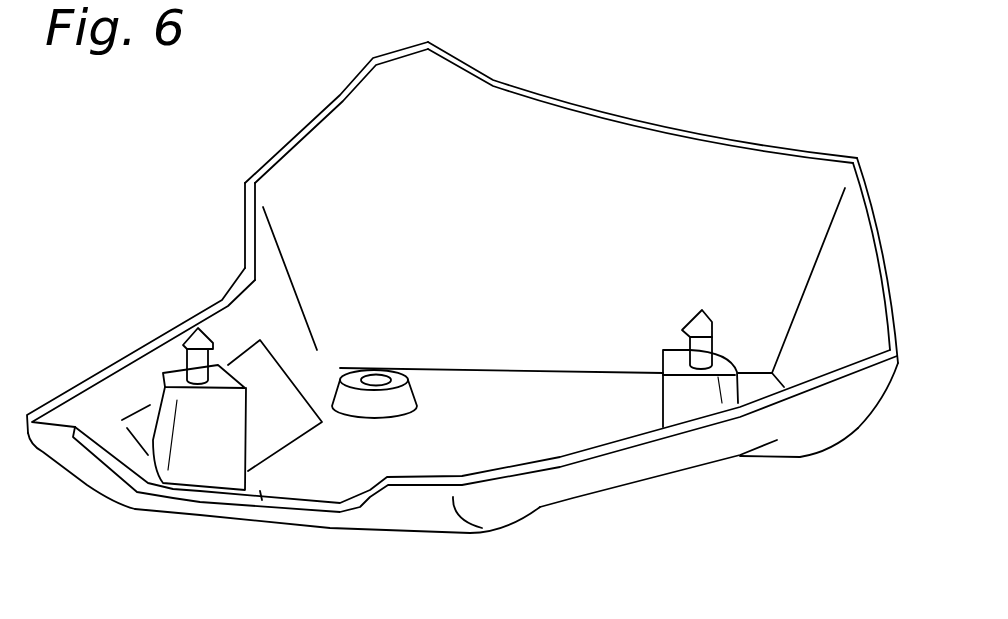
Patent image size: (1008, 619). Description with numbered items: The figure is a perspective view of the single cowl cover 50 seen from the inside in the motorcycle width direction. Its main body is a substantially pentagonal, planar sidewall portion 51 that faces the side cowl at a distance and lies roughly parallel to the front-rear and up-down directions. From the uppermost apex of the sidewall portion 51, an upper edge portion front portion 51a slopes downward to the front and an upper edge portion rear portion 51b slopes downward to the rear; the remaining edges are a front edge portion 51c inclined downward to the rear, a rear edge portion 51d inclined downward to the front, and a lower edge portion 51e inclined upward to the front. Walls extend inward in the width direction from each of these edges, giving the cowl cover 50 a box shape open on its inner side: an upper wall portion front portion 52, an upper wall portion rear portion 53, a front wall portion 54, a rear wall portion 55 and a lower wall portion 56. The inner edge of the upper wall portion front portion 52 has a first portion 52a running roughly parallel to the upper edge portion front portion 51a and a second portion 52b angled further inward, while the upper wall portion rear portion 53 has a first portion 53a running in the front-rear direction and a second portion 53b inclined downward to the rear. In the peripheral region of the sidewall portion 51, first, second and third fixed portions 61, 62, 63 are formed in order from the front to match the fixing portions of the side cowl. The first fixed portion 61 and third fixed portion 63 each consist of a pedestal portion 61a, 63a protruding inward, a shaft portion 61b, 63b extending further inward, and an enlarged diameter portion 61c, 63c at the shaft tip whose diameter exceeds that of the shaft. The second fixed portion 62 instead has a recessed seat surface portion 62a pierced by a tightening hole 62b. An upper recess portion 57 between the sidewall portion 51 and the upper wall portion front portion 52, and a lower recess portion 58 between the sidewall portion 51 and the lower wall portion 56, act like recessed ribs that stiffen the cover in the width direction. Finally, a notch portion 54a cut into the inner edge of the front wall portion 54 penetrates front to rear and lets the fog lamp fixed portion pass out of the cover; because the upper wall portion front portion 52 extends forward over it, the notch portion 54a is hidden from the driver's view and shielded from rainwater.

The cowl cover 50 is at (186, 211).
The sidewall portion 51 is at (493, 442).
The upper edge portion front portion 51a is at (315, 377).
The upper edge portion rear portion 51b is at (457, 368).
The front edge portion 51c is at (175, 515).
The rear edge portion 51d is at (785, 383).
The lower edge portion 51e is at (807, 457).
The upper wall portion front portion 52 is at (277, 322).
The first portion 52a is at (222, 305).
The second portion 52b is at (245, 253).
The upper wall portion rear portion 53 is at (555, 220).
The first portion 53a is at (318, 118).
The second portion 53b is at (596, 107).
The front wall portion 54 is at (85, 463).
The notch portion 54a is at (267, 492).
The rear wall portion 55 is at (860, 273).
The lower wall portion 56 is at (840, 410).
The upper recess portion 57 is at (262, 413).
The lower recess portion 58 is at (644, 497).
The first fixed portion 61 is at (103, 296).
The pedestal portion 61a is at (157, 407).
The shaft portion 61b is at (192, 362).
The enlarged diameter portion 61c is at (193, 335).
The second fixed portion 62 is at (370, 292).
The seat surface portion 62a is at (353, 377).
The tightening hole 62b is at (374, 377).
The third fixed portion 63 is at (643, 238).
The pedestal portion 63a is at (663, 402).
The shaft portion 63b is at (687, 343).
The enlarged diameter portion 63c is at (695, 308).